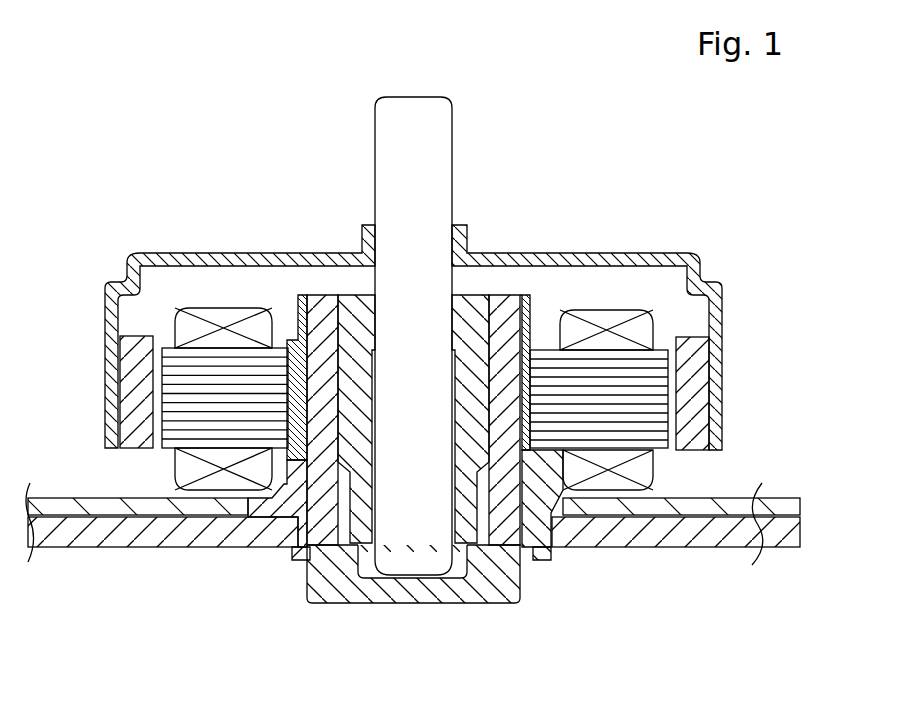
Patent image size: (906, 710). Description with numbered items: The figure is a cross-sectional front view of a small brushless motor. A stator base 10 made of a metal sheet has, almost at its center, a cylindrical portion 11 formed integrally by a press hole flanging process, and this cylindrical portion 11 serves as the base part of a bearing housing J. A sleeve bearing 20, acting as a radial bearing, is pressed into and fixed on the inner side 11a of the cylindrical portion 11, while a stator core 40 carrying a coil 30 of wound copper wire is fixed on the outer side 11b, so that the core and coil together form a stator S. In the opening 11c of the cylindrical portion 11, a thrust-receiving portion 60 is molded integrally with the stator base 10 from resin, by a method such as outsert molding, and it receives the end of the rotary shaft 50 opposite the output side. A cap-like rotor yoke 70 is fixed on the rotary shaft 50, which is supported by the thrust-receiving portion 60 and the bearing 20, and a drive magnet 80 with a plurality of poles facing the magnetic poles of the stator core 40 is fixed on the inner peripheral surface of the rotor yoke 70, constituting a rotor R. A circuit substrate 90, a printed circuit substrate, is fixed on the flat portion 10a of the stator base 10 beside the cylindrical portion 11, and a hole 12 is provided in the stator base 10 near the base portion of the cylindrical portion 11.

The stator base 10 is at (608, 533).
The flat portion 10a is at (748, 520).
The cylindrical portion 11 is at (510, 327).
The inner side 11a is at (480, 330).
The outer side 11b is at (300, 333).
The opening 11c is at (312, 583).
The hole 12 is at (532, 533).
The sleeve bearing 20 is at (395, 281).
The coil 30 is at (233, 330).
The stator core 40 is at (203, 377).
The rotary shaft 50 is at (400, 155).
The thrust-receiving portion 60 is at (423, 597).
The rotor yoke 70 is at (132, 270).
The drive magnet 80 is at (137, 372).
The circuit substrate 90 is at (55, 497).
The bearing housing J is at (540, 307).
The rotor R is at (730, 302).
The stator S is at (662, 477).